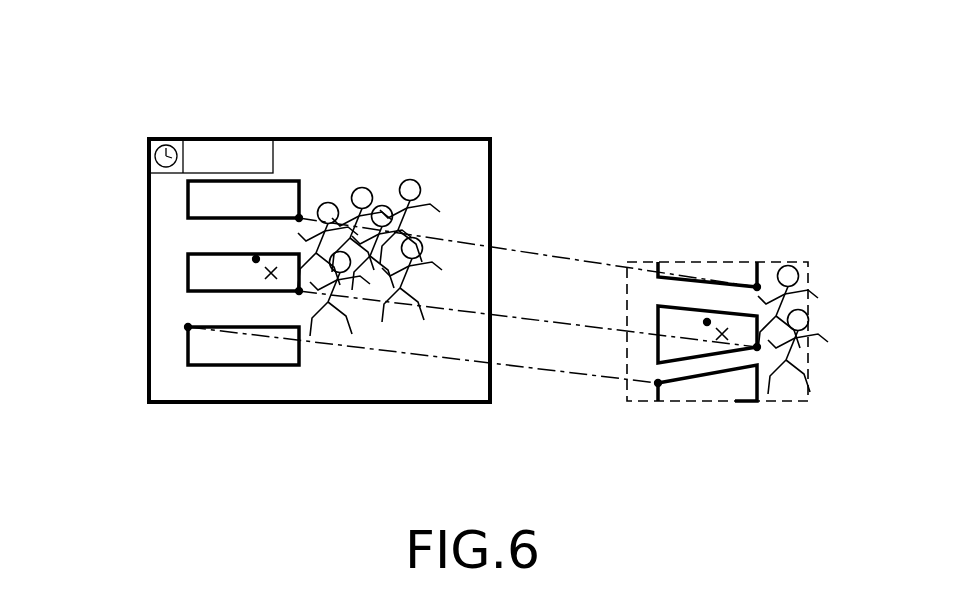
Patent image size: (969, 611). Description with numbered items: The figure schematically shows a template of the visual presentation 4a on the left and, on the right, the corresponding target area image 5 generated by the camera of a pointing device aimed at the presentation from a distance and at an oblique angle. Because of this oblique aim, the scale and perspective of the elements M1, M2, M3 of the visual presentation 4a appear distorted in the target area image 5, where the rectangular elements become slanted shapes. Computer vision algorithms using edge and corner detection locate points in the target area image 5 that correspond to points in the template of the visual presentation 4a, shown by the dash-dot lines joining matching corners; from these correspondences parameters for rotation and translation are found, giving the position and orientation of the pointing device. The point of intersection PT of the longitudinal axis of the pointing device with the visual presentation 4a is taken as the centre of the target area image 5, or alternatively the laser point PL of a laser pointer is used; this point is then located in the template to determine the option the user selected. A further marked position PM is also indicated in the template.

The visual presentation 4a is at (408, 139).
The target area image 5 is at (768, 262).
The element of the visual presentation M1 is at (200, 199).
The element of the visual presentation M2 is at (200, 283).
The element of the visual presentation M3 is at (200, 355).
The laser point PL is at (256, 259).
The mouse pointer position PM is at (278, 268).
The point of intersection PT is at (724, 262).